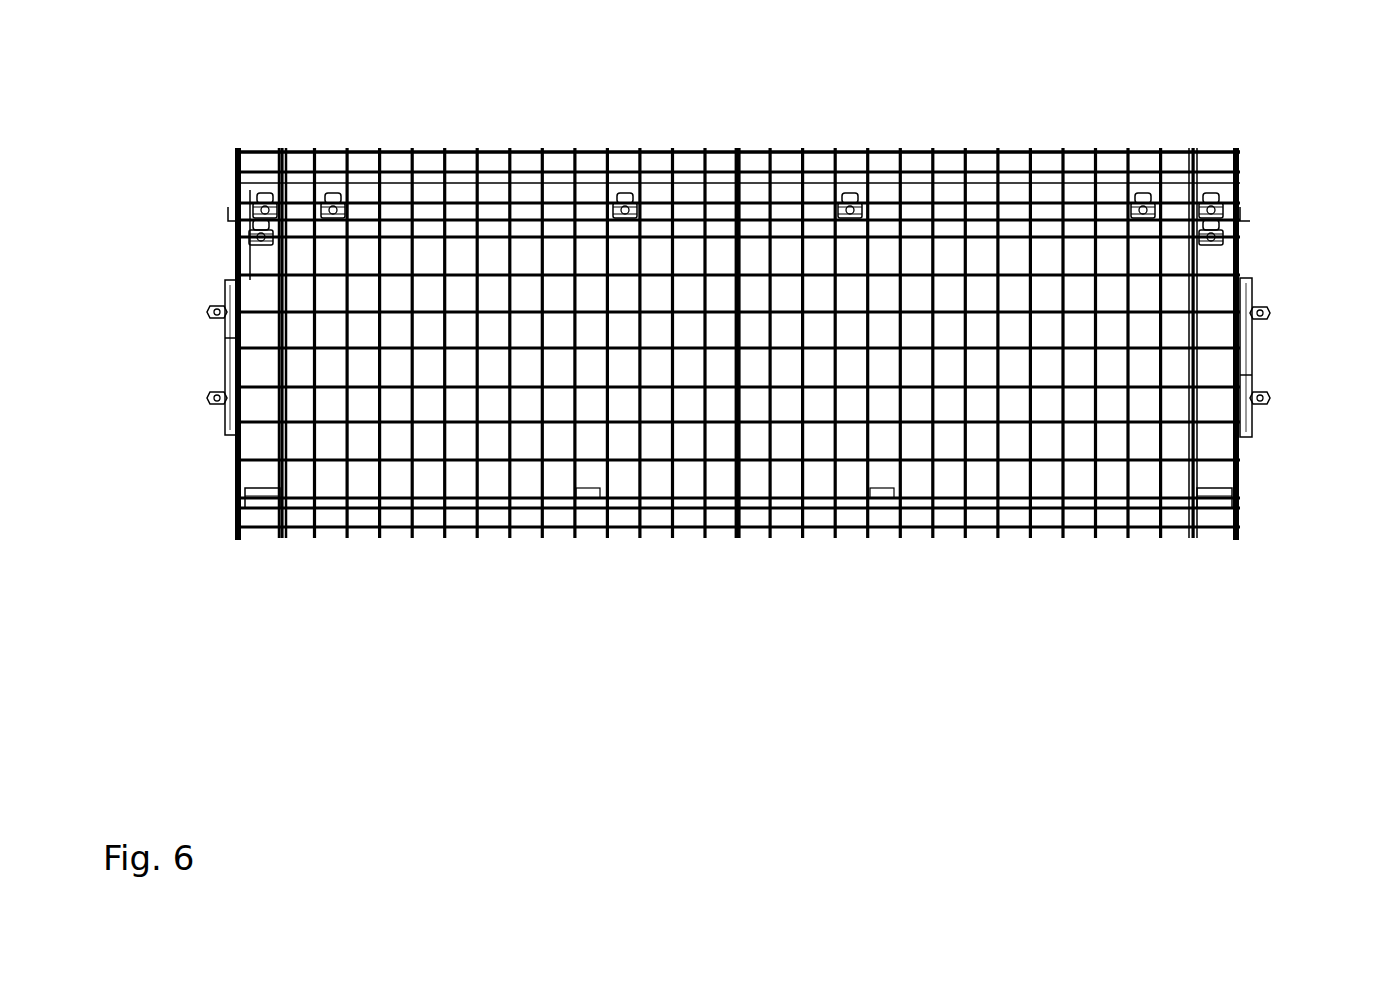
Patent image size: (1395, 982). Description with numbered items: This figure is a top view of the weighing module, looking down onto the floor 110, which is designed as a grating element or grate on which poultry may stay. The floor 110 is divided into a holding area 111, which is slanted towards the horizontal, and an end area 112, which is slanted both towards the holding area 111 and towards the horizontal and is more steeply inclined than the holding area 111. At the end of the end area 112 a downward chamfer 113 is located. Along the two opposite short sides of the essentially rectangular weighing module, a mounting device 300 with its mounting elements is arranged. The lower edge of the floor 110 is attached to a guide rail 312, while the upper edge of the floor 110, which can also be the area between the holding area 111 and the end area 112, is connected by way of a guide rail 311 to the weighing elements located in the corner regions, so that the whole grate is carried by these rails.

The floor 110 is at (1008, 128).
The holding area 111 is at (277, 437).
The end area 112 is at (237, 183).
The downward chamfer 113 is at (240, 158).
The mounting device 300 is at (213, 354).
The guide rail 311 is at (1245, 210).
The guide rail 312 is at (1197, 503).